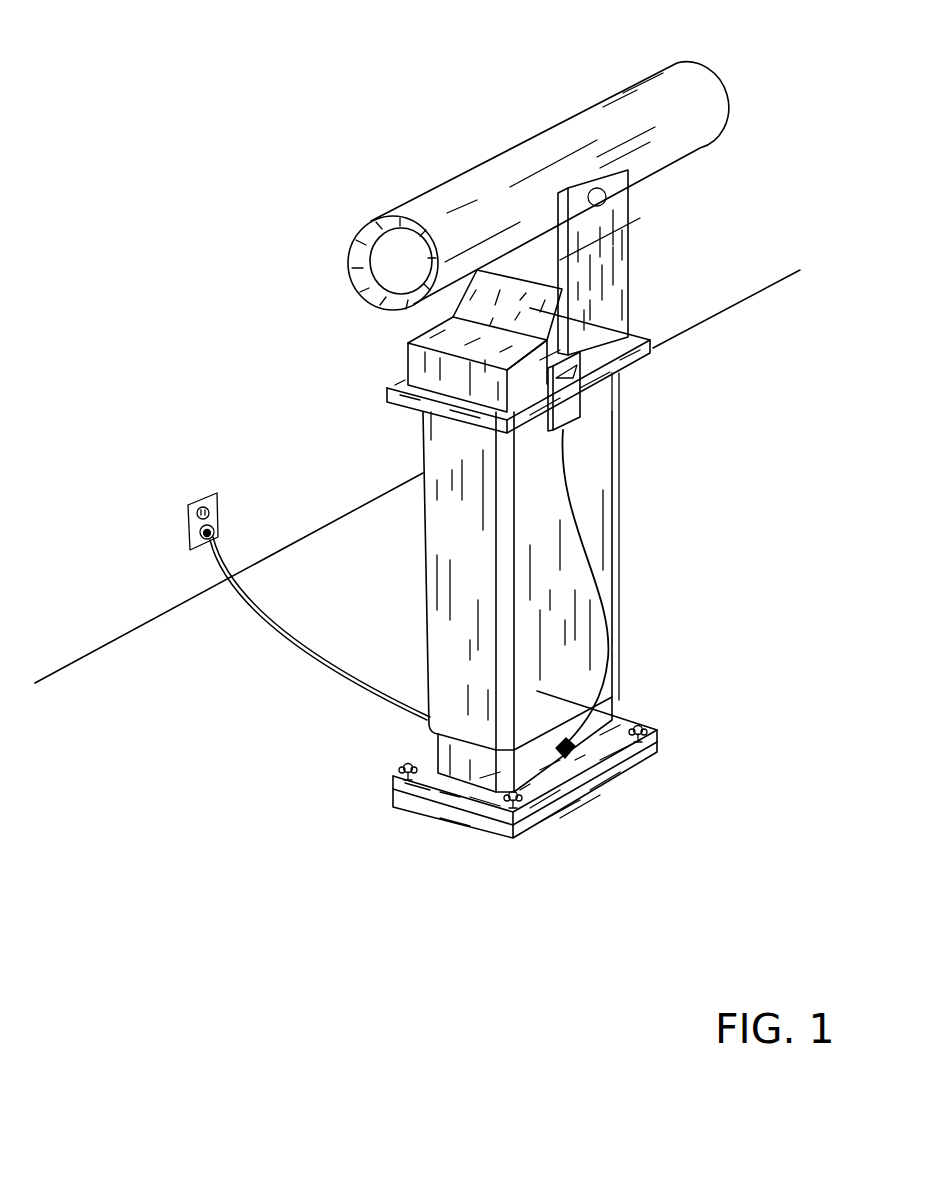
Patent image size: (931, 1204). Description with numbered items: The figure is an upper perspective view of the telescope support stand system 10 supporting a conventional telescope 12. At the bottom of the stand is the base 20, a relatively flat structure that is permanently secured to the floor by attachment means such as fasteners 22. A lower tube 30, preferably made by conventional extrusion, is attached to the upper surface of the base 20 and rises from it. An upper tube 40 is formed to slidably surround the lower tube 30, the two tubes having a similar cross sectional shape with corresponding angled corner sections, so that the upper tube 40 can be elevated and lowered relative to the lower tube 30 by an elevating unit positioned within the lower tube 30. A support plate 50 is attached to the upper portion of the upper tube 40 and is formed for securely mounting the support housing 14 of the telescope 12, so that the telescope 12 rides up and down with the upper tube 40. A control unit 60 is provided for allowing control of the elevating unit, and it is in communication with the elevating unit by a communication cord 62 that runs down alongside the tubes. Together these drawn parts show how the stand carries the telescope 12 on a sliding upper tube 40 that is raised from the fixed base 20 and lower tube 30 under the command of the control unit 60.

The telescope support stand system 10 is at (251, 105).
The telescope 12 is at (520, 143).
The support housing 14 is at (613, 285).
The base 20 is at (615, 797).
The fasteners 22 is at (647, 731).
The lower tube 30 is at (580, 733).
The upper tube 40 is at (595, 505).
The support plate 50 is at (636, 357).
The control unit 60 is at (583, 405).
The communication cord 62 is at (598, 583).